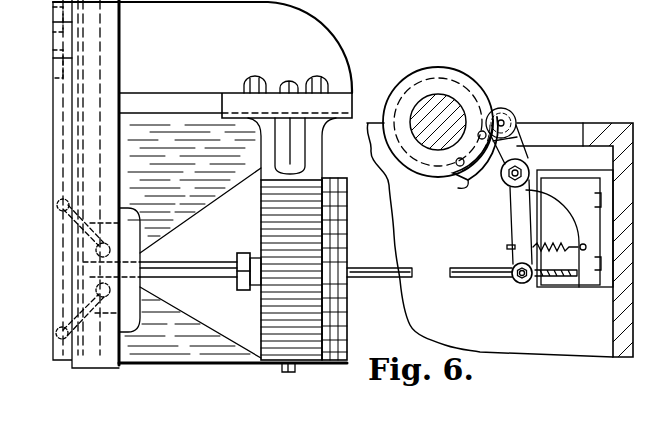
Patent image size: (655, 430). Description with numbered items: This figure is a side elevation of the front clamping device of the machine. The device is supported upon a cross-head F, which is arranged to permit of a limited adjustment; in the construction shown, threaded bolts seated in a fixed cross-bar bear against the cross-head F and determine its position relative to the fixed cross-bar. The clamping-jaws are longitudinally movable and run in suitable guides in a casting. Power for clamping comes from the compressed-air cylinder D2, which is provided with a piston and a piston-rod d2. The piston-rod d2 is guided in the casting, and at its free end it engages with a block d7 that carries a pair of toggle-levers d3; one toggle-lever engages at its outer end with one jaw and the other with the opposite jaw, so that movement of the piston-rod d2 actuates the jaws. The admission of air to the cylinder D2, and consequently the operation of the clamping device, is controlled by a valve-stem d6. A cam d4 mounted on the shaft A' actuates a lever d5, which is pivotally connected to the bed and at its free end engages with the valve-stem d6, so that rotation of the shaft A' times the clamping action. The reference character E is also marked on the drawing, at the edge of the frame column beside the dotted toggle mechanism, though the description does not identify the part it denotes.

The frame column E is at (59, 184).
The cross-head F is at (238, 97).
The shaft A' is at (450, 122).
The compressed-air cylinder D2 is at (270, 225).
The piston-rod d2 is at (180, 263).
The toggle-levers d3 is at (84, 212).
The cam d4 is at (467, 180).
The lever d5 is at (515, 212).
The valve-stem d6 is at (365, 268).
The block d7 is at (100, 245).